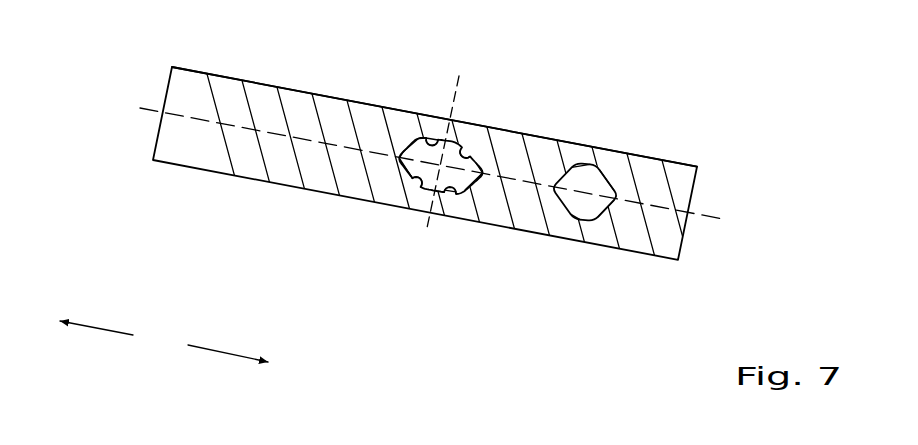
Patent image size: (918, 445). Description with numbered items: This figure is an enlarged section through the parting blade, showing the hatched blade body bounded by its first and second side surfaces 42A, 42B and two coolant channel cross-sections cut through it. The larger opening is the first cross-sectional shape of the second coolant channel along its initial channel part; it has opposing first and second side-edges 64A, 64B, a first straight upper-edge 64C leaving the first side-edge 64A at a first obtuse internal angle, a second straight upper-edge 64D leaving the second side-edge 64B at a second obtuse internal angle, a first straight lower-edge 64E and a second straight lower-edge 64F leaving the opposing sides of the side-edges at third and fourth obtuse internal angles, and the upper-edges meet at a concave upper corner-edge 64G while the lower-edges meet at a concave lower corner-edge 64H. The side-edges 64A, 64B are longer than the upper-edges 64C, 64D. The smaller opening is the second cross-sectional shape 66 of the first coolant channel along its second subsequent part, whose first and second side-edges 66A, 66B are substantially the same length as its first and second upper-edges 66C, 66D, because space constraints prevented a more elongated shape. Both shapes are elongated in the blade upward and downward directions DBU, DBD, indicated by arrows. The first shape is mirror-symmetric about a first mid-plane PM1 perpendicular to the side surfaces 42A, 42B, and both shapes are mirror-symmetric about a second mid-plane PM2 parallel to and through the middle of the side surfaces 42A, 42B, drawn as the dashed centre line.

The first side surface 42A is at (223, 177).
The second side surface 42B is at (235, 77).
The first mid-plane PM1 is at (455, 139).
The second mid-plane PM2 is at (456, 173).
The first side-edge 64A is at (432, 196).
The second side-edge 64B is at (450, 137).
The first straight upper-edge 64C is at (458, 191).
The second straight upper-edge 64D is at (487, 172).
The first straight lower-edge 64E is at (413, 184).
The second straight lower-edge 64F is at (416, 136).
The upper corner-edge 64G is at (474, 184).
The lower corner-edge 64H is at (395, 159).
The second cross-sectional shape 66 is at (601, 233).
The first side-edge 66A is at (586, 183).
The second side-edge 66B is at (588, 163).
The first upper-edge 66C is at (608, 212).
The second upper-edge 66D is at (617, 187).
The downward blade direction DBD is at (96, 346).
The upward blade direction DBU is at (228, 369).